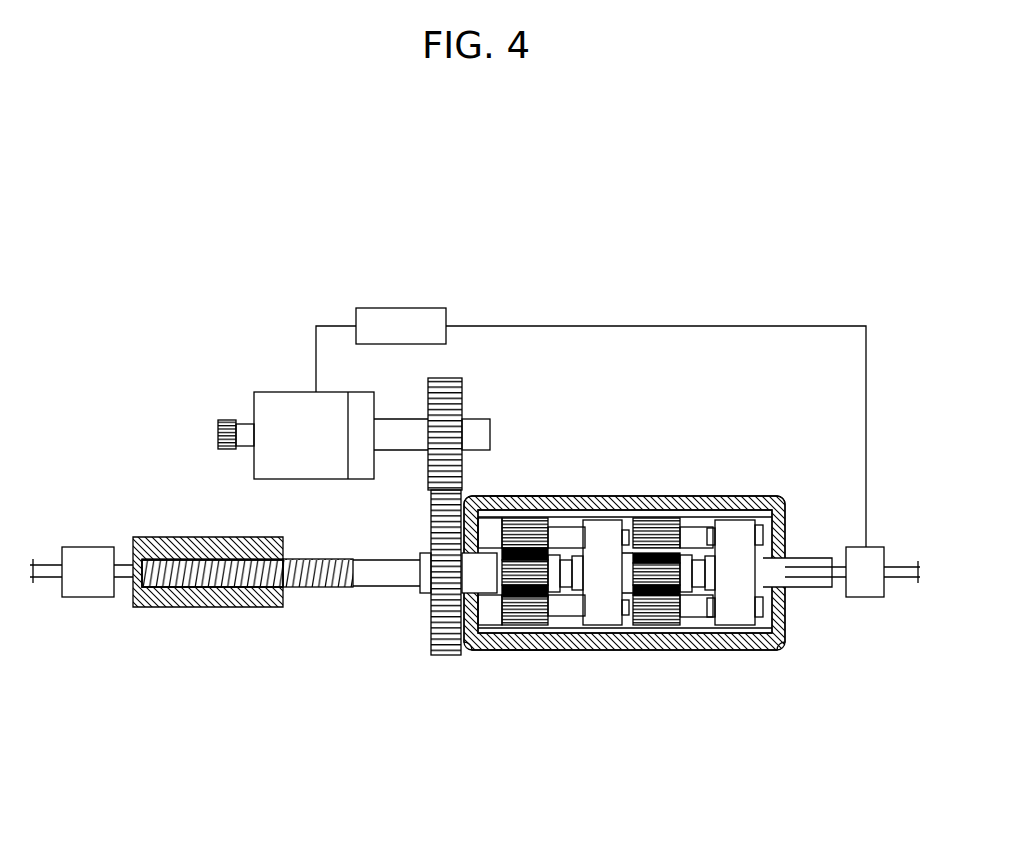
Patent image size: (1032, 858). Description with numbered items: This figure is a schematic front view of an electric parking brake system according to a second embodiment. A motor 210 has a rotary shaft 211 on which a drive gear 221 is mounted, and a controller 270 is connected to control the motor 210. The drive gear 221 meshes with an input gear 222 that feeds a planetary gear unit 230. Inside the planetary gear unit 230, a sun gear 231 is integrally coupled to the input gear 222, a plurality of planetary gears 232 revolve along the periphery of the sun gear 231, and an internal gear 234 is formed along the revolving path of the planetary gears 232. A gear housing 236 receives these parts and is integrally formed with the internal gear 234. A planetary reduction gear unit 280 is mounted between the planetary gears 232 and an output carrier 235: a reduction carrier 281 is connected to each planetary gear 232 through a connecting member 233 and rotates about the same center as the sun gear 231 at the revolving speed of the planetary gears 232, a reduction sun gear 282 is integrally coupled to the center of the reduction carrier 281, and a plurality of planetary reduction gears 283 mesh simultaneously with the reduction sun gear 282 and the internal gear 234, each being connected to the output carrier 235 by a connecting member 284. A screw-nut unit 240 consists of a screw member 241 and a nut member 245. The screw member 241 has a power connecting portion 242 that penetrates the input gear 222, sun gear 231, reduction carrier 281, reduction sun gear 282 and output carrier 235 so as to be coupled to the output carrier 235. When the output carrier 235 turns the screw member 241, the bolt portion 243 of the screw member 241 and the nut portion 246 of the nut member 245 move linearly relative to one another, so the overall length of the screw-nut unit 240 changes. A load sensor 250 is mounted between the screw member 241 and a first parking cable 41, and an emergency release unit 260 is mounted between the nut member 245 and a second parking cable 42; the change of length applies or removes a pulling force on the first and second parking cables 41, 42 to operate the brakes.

The first parking cable 41 is at (903, 578).
The second parking cable 42 is at (45, 565).
The motor 210 is at (272, 392).
The rotary shaft 211 is at (490, 432).
The drive gear 221 is at (464, 390).
The input gear 222 is at (432, 640).
The planetary gear unit 230 is at (634, 494).
The sun gear 231 is at (527, 578).
The planetary gears 232 is at (511, 620).
The connecting member 233 is at (566, 527).
The internal gear 234 is at (487, 637).
The output carrier 235 is at (738, 521).
The gear housing 236 is at (520, 496).
The screw-nut unit 240 is at (239, 606).
The screw member 241 is at (390, 592).
The power connecting portion 242 is at (812, 588).
The bolt portion 243 is at (331, 556).
The nut member 245 is at (278, 609).
The nut portion 246 is at (158, 569).
The load sensor 250 is at (872, 548).
The emergency release unit 260 is at (88, 547).
The controller 270 is at (410, 308).
The planetary reduction gear unit 280 is at (663, 593).
The reduction carrier 281 is at (600, 616).
The reduction sun gear 282 is at (668, 594).
The planetary reduction gears 283 is at (659, 518).
The connecting member 284 is at (700, 528).